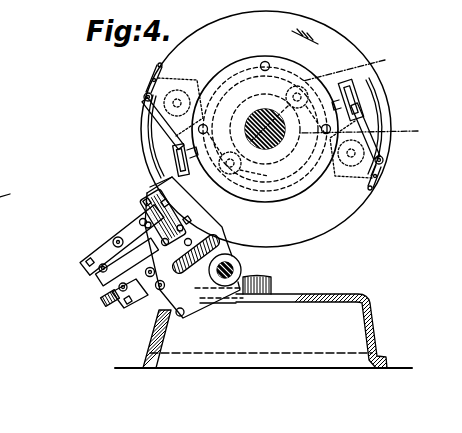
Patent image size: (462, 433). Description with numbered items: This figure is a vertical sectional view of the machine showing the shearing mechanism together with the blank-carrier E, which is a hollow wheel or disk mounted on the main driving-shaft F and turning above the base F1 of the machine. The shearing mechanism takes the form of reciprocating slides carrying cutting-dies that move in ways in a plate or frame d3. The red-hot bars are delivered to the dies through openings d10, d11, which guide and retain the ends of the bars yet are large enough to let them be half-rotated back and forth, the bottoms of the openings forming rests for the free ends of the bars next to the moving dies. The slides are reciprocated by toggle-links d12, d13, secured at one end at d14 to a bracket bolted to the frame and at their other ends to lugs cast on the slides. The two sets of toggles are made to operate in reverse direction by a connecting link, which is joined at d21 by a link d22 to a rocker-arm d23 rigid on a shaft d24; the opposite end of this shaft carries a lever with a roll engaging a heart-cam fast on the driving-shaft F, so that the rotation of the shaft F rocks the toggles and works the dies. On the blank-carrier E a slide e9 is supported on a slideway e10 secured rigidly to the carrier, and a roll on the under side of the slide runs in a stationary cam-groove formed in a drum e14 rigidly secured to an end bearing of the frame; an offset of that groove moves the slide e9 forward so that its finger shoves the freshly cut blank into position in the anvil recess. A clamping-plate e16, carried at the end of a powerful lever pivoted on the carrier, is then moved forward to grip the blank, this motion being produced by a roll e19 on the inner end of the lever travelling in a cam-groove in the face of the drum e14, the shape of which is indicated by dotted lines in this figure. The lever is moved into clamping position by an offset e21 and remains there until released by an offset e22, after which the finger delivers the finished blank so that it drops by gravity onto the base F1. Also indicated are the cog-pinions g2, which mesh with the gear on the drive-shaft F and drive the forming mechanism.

The blank-carrier E is at (266, 129).
The main driving-shaft F is at (278, 143).
The base F1 is at (288, 329).
The slide e9 is at (401, 97).
The slideway e10 is at (398, 70).
The drum e14 is at (313, 73).
The clamping-plate e16 is at (398, 173).
The roll e19 is at (366, 61).
The offset e21 is at (247, 116).
The offset e22 is at (370, 127).
The plate or frame d3 is at (100, 238).
The opening d10 is at (180, 223).
The opening d11 is at (150, 187).
The toggle-link d12 is at (132, 281).
The toggle-link d13 is at (133, 218).
The pivot d14 is at (247, 233).
The pivot d21 is at (135, 296).
The link d22 is at (157, 311).
The rocker-arm d23 is at (212, 303).
The shaft d24 is at (240, 250).
The cog-pinion g2 is at (21, 182).